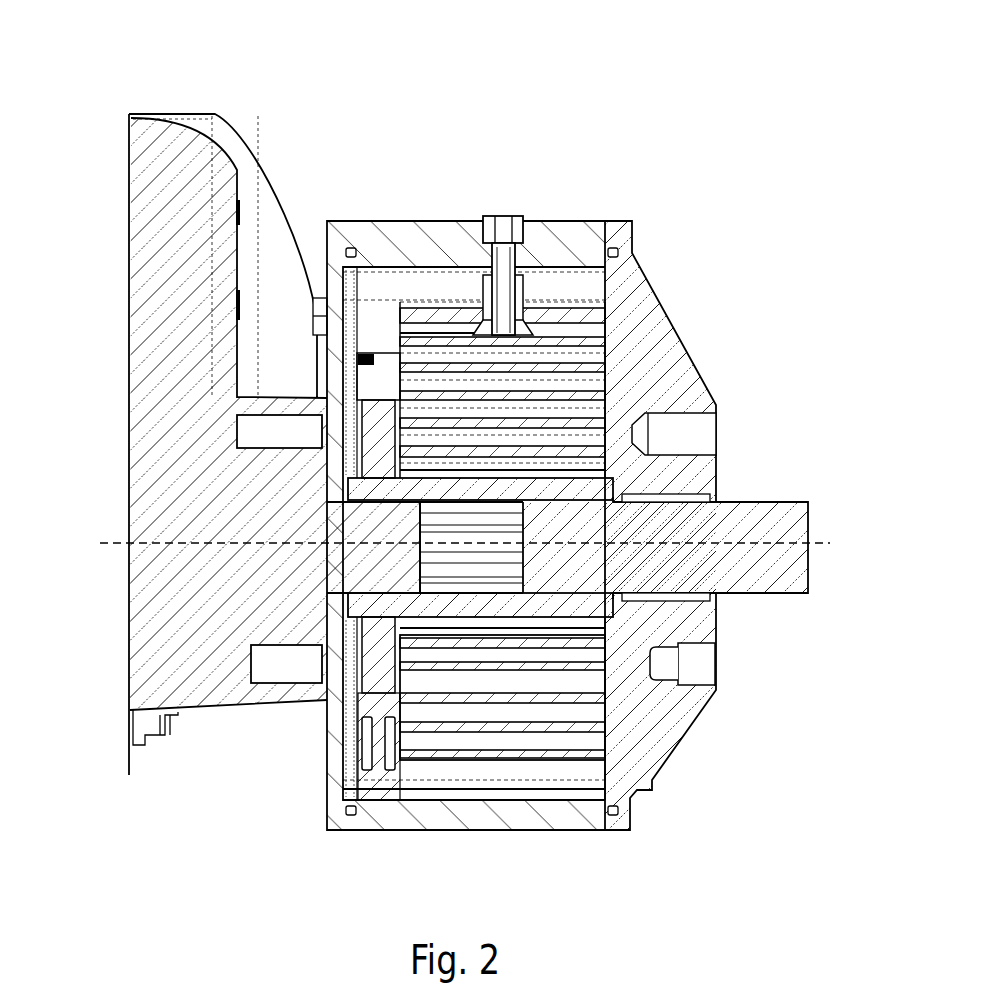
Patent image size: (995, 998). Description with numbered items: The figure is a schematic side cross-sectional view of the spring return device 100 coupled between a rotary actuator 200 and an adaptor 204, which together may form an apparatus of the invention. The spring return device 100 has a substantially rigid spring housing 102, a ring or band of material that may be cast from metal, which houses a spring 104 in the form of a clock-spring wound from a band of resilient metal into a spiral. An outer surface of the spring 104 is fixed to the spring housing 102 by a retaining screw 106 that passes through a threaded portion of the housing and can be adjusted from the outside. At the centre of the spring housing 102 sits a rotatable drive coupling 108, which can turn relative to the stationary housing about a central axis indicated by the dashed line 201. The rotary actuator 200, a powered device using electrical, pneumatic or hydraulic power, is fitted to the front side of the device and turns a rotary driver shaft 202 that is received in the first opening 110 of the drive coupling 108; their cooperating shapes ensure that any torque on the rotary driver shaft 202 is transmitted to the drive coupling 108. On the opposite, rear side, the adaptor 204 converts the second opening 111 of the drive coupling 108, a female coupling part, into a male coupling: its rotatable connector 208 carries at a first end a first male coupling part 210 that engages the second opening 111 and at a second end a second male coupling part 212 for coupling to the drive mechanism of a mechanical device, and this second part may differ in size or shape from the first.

The spring return device 100 is at (448, 490).
The spring housing 102 is at (560, 835).
The spring 104 is at (428, 755).
The retaining screw 106 is at (507, 215).
The drive coupling 108 is at (582, 477).
The first opening 110 is at (395, 530).
The second opening 111 is at (575, 531).
The rotary actuator 200 is at (150, 113).
The central axis 201 is at (823, 542).
The rotary driver shaft 202 is at (370, 568).
The adaptor 204 is at (680, 358).
The rotatable connector 208 is at (730, 495).
The first male coupling part 210 is at (575, 563).
The second male coupling part 212 is at (777, 558).